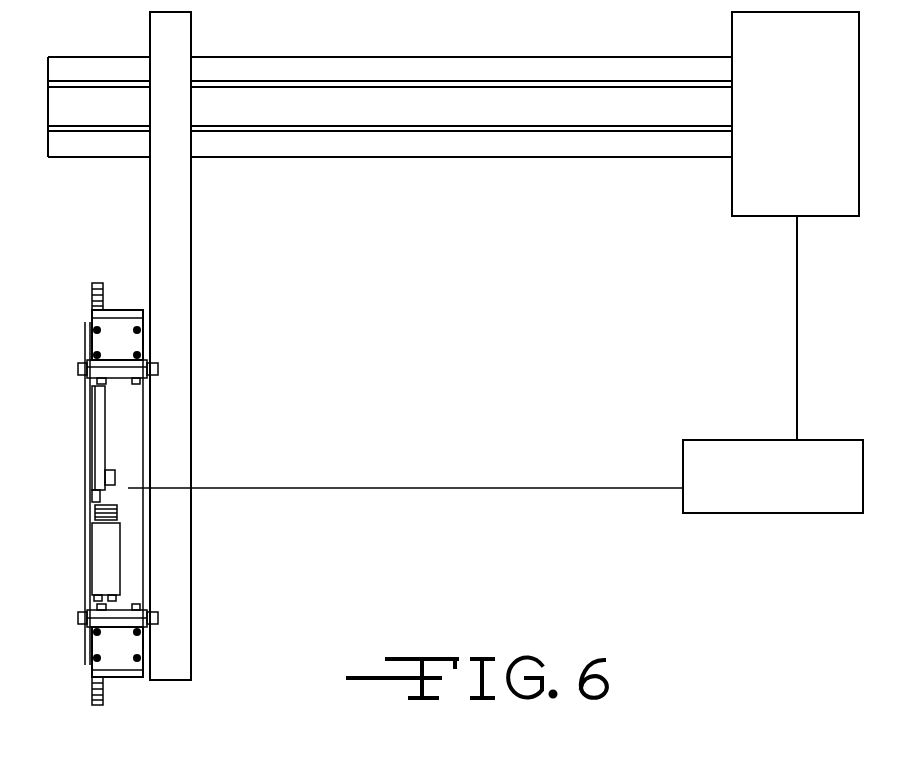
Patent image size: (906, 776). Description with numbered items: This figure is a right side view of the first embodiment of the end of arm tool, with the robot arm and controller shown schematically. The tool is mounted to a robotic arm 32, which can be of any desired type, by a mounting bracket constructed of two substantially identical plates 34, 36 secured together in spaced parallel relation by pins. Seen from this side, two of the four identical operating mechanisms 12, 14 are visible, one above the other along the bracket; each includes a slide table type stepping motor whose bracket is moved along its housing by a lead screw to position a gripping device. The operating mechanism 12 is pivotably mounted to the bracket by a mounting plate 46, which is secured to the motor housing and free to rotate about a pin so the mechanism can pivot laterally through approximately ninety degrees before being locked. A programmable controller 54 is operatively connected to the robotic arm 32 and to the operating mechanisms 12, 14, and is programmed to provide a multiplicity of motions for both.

The operating mechanism 12 is at (85, 320).
The operating mechanism 14 is at (90, 676).
The robotic arm 32 is at (192, 340).
The plate 34 is at (150, 471).
The plate 36 is at (83, 455).
The mounting plate 46 is at (112, 386).
The programmable controller 54 is at (828, 440).